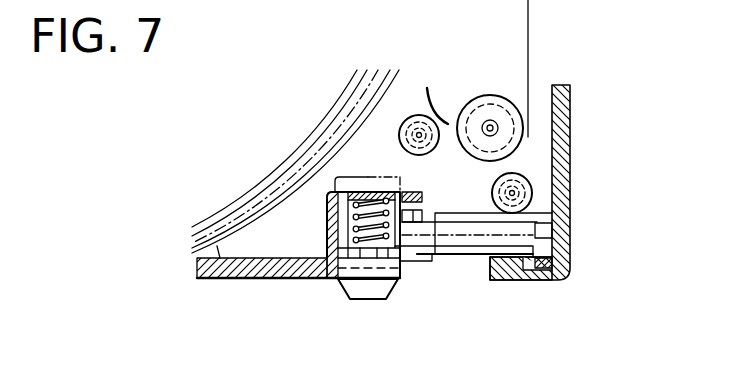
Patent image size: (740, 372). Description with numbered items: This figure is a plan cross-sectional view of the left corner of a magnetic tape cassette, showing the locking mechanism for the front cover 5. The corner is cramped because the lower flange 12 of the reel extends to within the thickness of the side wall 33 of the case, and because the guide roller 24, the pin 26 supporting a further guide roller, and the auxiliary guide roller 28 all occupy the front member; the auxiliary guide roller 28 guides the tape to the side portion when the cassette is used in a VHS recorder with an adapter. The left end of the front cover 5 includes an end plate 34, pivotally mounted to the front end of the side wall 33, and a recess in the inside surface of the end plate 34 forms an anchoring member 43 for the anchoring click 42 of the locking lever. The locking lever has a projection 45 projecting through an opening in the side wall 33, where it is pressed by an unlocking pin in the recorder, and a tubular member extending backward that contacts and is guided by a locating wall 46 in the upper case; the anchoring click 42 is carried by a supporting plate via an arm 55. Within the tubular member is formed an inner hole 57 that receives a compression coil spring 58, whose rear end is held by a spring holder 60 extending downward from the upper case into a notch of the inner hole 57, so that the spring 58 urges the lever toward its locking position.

The front cover 5 is at (570, 158).
The lower flange 12 is at (213, 280).
The guide roller 24 is at (407, 123).
The pin 26 is at (523, 128).
The auxiliary guide roller 28 is at (532, 190).
The side wall 33 is at (299, 280).
The end plate 34 is at (500, 282).
The anchoring click 42 is at (545, 274).
The anchoring member 43 is at (530, 282).
The projection 45 is at (368, 300).
The locating wall 46 is at (327, 238).
The arm 55 is at (458, 255).
The inner hole 57 is at (422, 209).
The compression coil spring 58 is at (347, 218).
The spring holder 60 is at (367, 192).